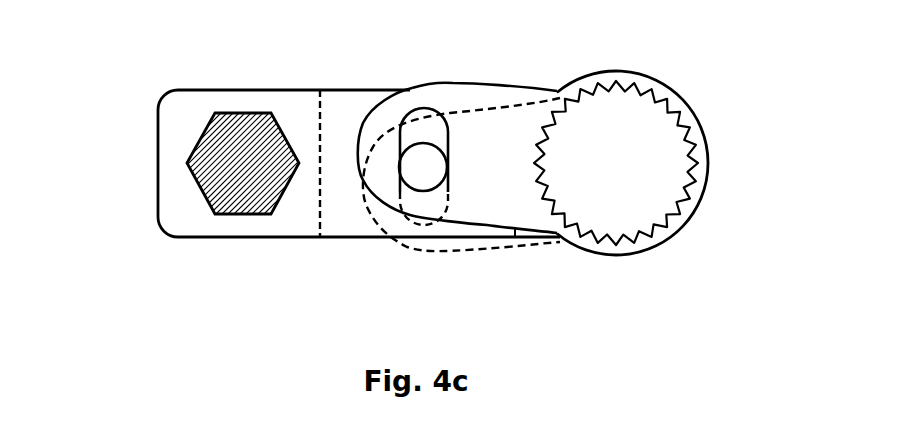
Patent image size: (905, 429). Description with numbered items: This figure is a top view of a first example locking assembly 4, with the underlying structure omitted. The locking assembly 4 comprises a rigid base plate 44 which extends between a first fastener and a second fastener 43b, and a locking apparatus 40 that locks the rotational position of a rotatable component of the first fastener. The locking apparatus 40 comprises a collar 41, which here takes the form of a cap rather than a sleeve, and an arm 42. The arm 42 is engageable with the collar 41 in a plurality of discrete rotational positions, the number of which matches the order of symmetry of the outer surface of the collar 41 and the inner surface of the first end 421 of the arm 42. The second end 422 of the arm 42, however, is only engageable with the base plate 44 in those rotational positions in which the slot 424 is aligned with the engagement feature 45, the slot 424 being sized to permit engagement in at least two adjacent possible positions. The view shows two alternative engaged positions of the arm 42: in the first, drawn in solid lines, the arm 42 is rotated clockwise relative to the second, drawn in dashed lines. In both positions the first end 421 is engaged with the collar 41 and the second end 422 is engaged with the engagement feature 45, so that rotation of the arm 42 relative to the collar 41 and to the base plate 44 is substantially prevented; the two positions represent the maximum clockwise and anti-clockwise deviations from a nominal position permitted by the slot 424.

The locking assembly 4 is at (108, 272).
The locking apparatus 40 is at (622, 275).
The collar 41 is at (653, 182).
The first end of the arm 421 is at (708, 167).
The arm 42 is at (470, 95).
The second end of the arm 422 is at (372, 140).
The slot 424 is at (420, 127).
The base plate 44 is at (287, 103).
The second fastener 43b is at (238, 152).
The engagement feature 45 is at (415, 193).